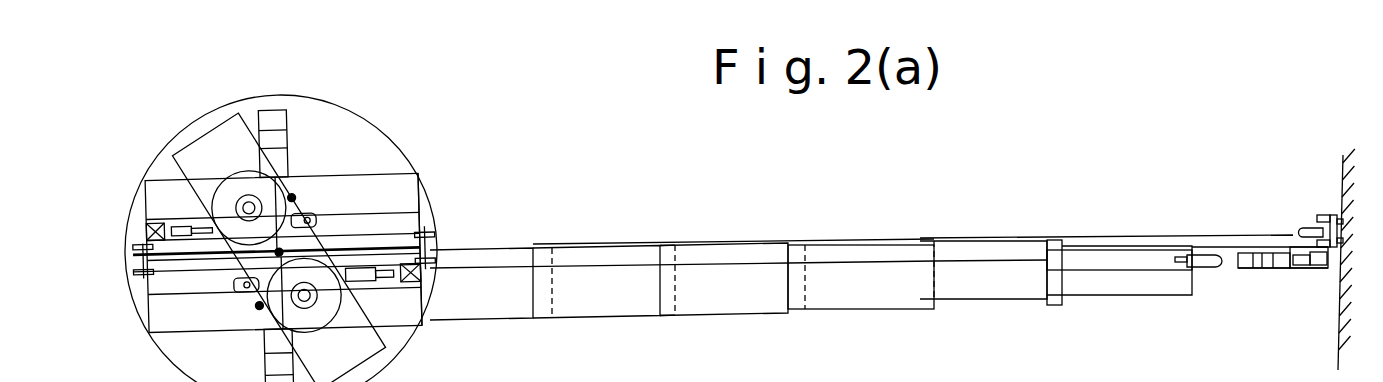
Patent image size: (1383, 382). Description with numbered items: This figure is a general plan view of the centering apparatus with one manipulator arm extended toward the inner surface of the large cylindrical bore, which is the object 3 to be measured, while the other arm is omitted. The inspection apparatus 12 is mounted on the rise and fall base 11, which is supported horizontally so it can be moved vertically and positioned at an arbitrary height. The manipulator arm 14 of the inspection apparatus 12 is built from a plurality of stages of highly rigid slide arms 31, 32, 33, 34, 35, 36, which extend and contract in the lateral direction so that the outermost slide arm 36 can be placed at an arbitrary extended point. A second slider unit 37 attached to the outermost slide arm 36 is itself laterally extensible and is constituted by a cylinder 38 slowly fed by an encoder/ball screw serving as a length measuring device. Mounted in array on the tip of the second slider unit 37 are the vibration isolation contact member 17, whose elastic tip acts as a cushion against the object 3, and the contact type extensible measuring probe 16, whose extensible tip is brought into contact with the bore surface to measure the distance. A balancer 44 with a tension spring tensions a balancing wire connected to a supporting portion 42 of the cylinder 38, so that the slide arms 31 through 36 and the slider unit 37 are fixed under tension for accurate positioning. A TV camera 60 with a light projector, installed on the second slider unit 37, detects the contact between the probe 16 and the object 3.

The object to be measured 3 is at (1342, 183).
The rise and fall base 11 is at (398, 149).
The inspection apparatus 12 is at (419, 213).
The manipulator arm 14 is at (674, 324).
The contact type extensible measuring probe 16 is at (1300, 230).
The vibration isolation contact member 17 is at (1333, 215).
The slide arm 31 is at (517, 320).
The slide arm 32 is at (622, 318).
The slide arm 33 is at (742, 313).
The slide arm 34 is at (872, 310).
The slide arm 35 is at (1015, 300).
The outermost slide arm 36 is at (1125, 295).
The second slider unit 37 is at (1222, 269).
The cylinder 38 is at (1285, 270).
The supporting portion 42 is at (1187, 264).
The balancer with tension spring 44 is at (378, 285).
The TV camera 60 is at (1300, 270).